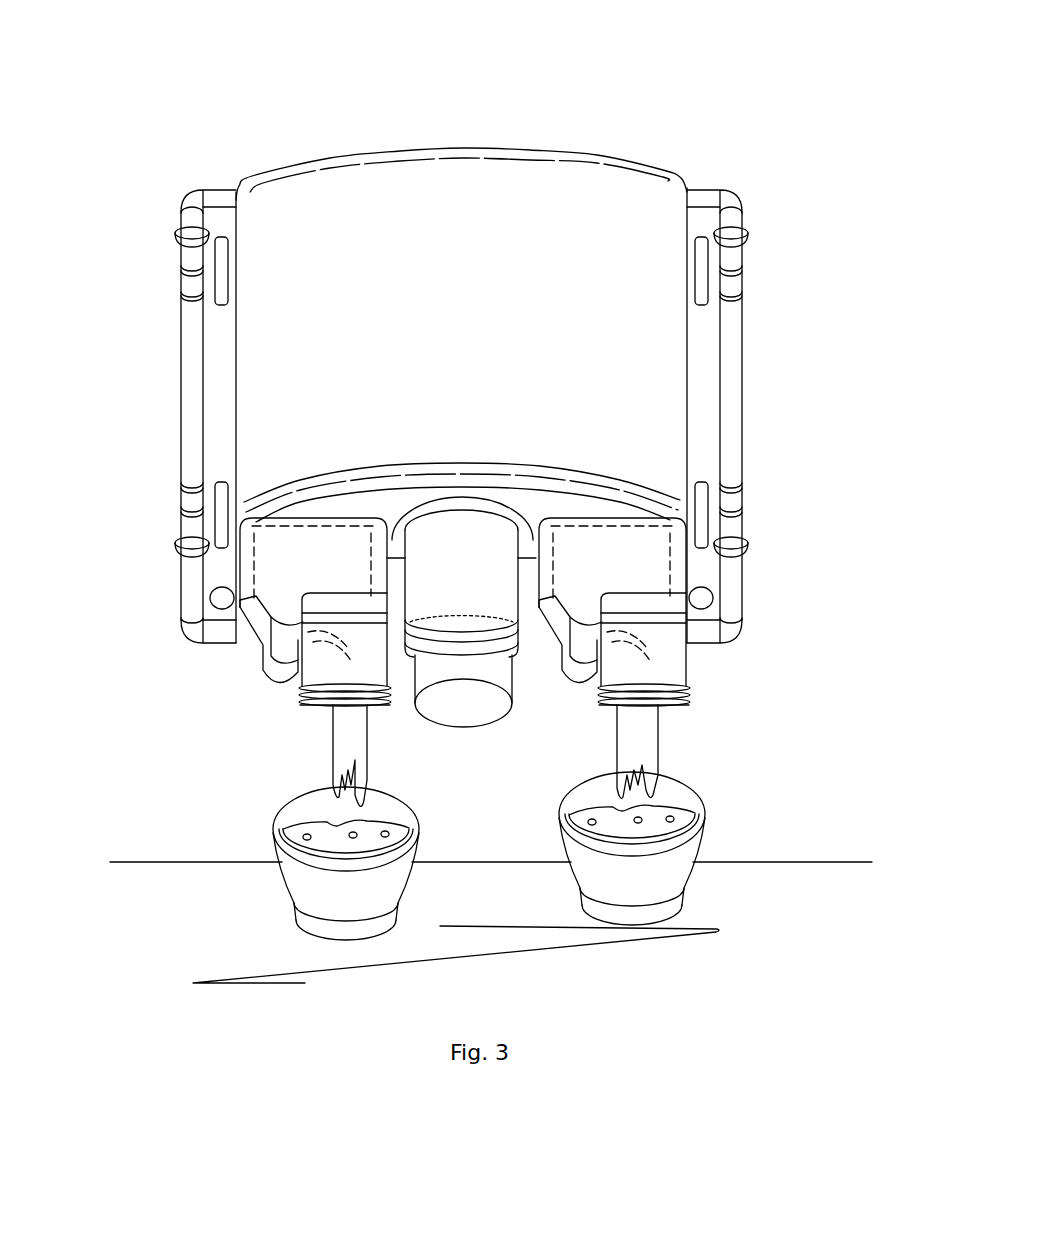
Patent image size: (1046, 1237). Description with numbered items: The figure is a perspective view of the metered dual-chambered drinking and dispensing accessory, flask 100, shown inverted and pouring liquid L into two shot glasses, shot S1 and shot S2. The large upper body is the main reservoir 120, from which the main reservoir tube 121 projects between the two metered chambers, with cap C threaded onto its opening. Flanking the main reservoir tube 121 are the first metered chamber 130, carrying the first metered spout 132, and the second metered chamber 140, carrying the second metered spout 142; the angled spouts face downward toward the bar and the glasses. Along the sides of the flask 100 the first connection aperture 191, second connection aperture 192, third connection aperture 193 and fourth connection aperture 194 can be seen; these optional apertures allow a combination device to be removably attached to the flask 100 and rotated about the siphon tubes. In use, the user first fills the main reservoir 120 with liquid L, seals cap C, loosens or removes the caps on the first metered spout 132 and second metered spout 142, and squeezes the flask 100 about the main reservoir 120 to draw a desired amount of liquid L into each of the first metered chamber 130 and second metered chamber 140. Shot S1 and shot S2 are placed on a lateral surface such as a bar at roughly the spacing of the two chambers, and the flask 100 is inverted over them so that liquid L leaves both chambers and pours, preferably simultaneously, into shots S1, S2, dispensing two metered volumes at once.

The flask 100 is at (541, 98).
The main reservoir 120 is at (502, 362).
The main reservoir tube 121 is at (479, 585).
The cap C is at (467, 705).
The first metered chamber 130 is at (324, 578).
The first metered spout 132 is at (317, 708).
The second metered chamber 140 is at (639, 570).
The second metered spout 142 is at (673, 708).
The first connection aperture 191 is at (222, 272).
The second connection aperture 192 is at (220, 505).
The third connection aperture 193 is at (703, 262).
The fourth connection aperture 194 is at (705, 493).
The liquid L is at (355, 745).
The shot S1 is at (672, 865).
The shot S2 is at (385, 878).